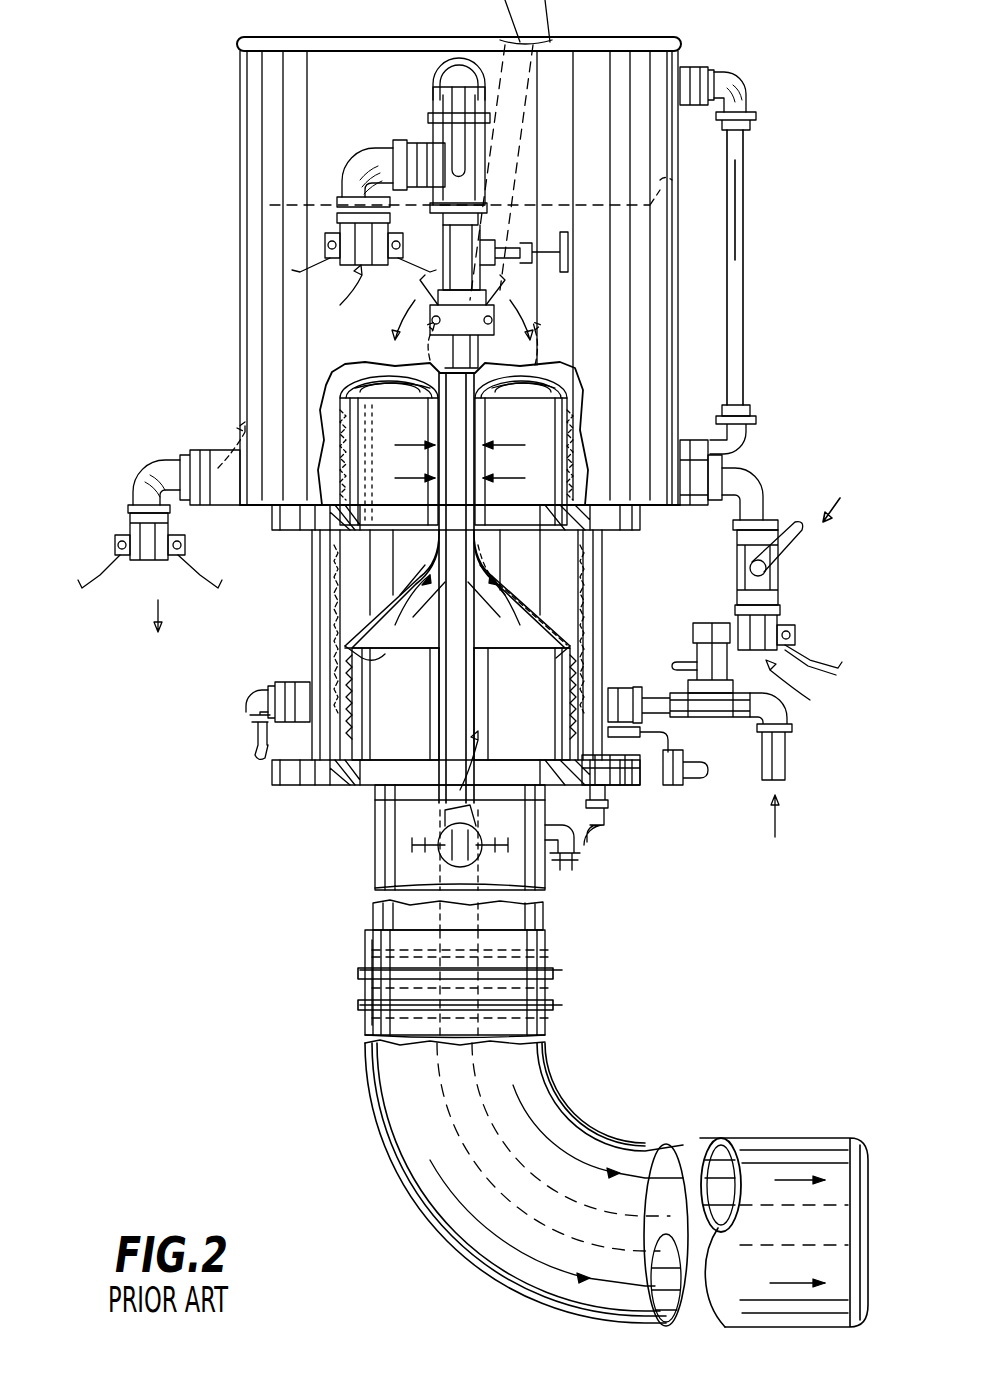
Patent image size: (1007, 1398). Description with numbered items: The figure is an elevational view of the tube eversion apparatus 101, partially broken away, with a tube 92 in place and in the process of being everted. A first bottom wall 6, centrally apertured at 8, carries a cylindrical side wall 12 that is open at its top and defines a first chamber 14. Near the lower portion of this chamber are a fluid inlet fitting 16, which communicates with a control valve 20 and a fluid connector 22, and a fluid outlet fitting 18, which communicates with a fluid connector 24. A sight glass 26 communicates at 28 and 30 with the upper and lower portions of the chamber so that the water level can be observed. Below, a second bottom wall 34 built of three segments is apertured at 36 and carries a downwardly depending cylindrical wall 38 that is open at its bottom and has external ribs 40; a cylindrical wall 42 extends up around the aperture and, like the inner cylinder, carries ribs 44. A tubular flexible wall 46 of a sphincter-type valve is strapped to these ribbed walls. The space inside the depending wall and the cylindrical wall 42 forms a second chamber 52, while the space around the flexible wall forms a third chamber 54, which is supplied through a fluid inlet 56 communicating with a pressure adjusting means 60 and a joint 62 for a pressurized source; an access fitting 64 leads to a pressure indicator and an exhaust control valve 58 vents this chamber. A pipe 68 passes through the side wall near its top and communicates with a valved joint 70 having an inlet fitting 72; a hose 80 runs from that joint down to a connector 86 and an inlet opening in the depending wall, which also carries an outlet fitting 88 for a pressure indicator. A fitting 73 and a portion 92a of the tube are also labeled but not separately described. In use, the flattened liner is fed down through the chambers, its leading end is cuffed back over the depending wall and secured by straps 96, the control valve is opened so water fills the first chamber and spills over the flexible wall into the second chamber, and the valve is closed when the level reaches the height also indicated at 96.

The first bottom wall 6 is at (636, 530).
The central aperture 8 is at (558, 497).
The cylindrical side wall 12 is at (668, 300).
The first chamber 14 is at (348, 368).
The fluid inlet fitting 16 is at (703, 505).
The fluid outlet fitting 18 is at (225, 450).
The control valve 20 is at (780, 578).
The fluid connector 22 is at (782, 615).
The fluid connector 24 is at (135, 535).
The sight glass 26 is at (746, 335).
The upper sight glass connection 28 is at (690, 70).
The lower sight glass connection 30 is at (686, 445).
The second bottom wall 34 is at (628, 785).
The aperture 36 is at (395, 810).
The downwardly depending cylindrical wall 38 is at (550, 920).
The external ribs 40 is at (372, 992).
The cylindrical wall 42 is at (375, 785).
The ribs 44 is at (560, 445).
The flexible wall 46 is at (540, 600).
The second chamber 52 is at (360, 635).
The third chamber 54 is at (355, 547).
The fluid inlet 56 is at (628, 695).
The exhaust control valve 58 is at (678, 785).
The pressure adjusting means 60 is at (712, 630).
The joint 62 is at (790, 755).
The access fitting 64 is at (298, 683).
The pipe 68 is at (452, 58).
The valved joint 70 is at (490, 145).
The inlet fitting 72 is at (418, 145).
The coupling 73 is at (345, 222).
The hose 80 is at (440, 335).
The connector 86 is at (415, 845).
The outlet fitting 88 is at (556, 866).
The tube 92 is at (558, 18).
The hose end 92a is at (382, 938).
The straps 96 is at (562, 1008).
The tube eversion apparatus 101 is at (857, 493).